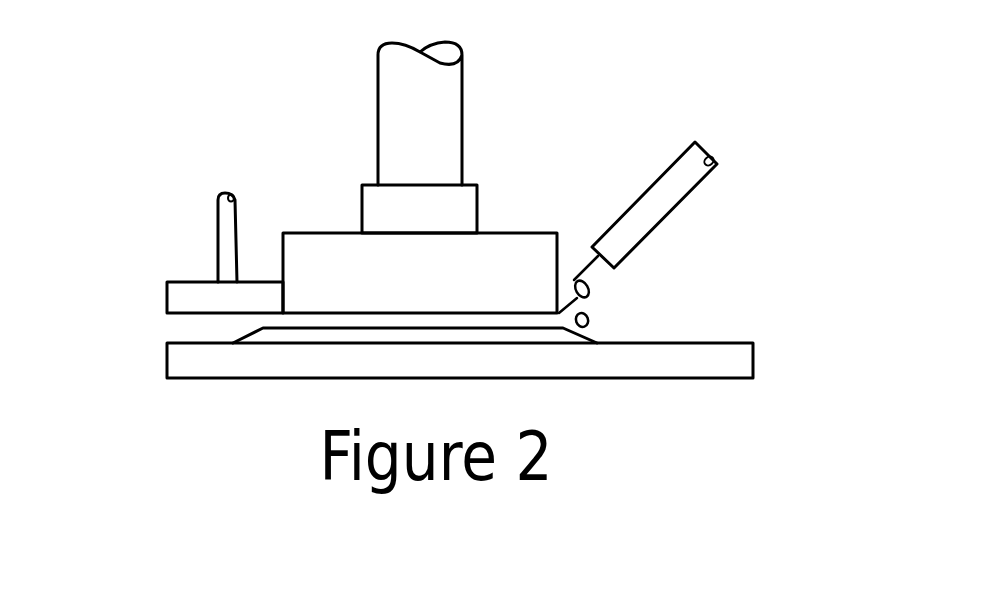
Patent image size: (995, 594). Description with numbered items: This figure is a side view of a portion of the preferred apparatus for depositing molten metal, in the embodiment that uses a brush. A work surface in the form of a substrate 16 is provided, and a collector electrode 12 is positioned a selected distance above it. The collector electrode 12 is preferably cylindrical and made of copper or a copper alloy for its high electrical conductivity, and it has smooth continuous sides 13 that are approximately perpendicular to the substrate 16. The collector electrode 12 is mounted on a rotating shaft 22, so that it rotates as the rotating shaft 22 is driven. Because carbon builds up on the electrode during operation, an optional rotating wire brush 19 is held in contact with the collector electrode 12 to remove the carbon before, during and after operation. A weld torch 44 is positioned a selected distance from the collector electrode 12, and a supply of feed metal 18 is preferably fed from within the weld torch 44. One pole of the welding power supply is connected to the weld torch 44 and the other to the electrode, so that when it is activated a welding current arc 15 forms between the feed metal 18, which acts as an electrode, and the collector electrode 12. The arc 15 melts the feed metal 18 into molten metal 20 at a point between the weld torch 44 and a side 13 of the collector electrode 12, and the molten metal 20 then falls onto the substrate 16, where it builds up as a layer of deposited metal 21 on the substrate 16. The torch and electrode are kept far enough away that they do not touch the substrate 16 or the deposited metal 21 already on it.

The collector electrode 12 is at (318, 252).
The sides 13 is at (284, 259).
The welding current arc 15 is at (564, 292).
The substrate 16 is at (185, 360).
The feed metal 18 is at (597, 268).
The wire brush 19 is at (190, 292).
The molten metal 20 is at (592, 320).
The conductive layer 21 is at (270, 337).
The rotating shaft 22 is at (447, 122).
The weld torch 44 is at (685, 183).